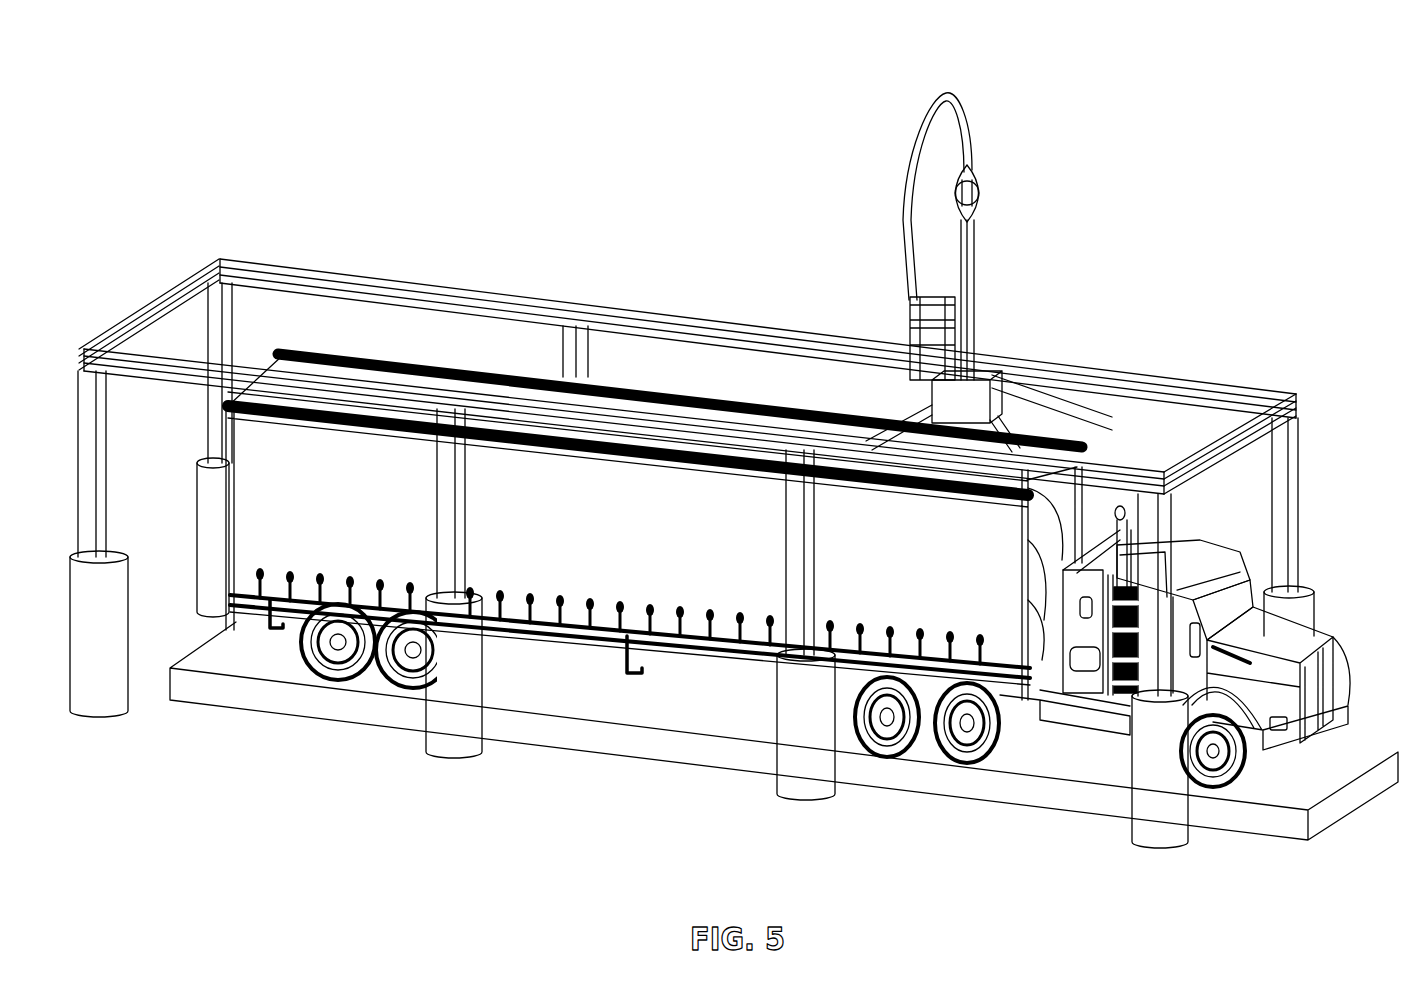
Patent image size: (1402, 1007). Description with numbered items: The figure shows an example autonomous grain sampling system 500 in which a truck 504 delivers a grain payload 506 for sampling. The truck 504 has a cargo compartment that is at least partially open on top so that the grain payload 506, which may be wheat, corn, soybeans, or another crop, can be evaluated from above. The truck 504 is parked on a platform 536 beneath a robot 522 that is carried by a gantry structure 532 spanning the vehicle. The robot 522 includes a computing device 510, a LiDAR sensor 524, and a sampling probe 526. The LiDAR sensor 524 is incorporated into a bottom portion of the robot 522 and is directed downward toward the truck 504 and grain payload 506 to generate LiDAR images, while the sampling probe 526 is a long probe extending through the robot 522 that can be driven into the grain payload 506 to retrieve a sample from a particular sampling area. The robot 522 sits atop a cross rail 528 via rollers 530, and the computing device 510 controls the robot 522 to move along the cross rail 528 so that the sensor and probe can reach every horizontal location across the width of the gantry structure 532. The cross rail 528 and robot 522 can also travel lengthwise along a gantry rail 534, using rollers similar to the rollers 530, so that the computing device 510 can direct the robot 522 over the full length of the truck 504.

The autonomous grain sampling system 500 is at (734, 439).
The truck 504 is at (1335, 640).
The grain payload 506 is at (390, 407).
The computing device 510 is at (935, 382).
The robot 522 is at (978, 168).
The LiDAR sensor 524 is at (988, 378).
The sampling probe 526 is at (975, 262).
The cross rail 528 is at (1052, 395).
The rollers 530 is at (1018, 392).
The gantry structure 532 is at (1297, 500).
The gantry rail 534 is at (790, 332).
The platform 536 is at (205, 637).